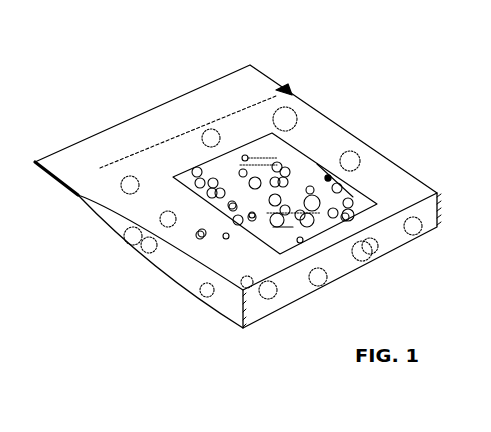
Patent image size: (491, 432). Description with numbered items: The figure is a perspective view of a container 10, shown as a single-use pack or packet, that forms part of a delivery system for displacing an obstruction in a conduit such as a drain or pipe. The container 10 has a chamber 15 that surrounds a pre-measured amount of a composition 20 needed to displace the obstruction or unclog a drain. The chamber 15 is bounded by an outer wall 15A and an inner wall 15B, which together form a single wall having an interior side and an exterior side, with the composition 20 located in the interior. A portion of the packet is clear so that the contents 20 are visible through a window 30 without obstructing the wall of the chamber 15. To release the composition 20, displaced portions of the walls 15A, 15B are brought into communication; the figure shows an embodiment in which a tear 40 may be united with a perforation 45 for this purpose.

The container 10 is at (102, 68).
The chamber 15 is at (214, 308).
The outer wall 15A is at (232, 322).
The inner wall 15B is at (326, 177).
The composition 20 is at (344, 204).
The window 30 is at (215, 209).
The tear 40 is at (284, 89).
The perforation 45 is at (103, 171).